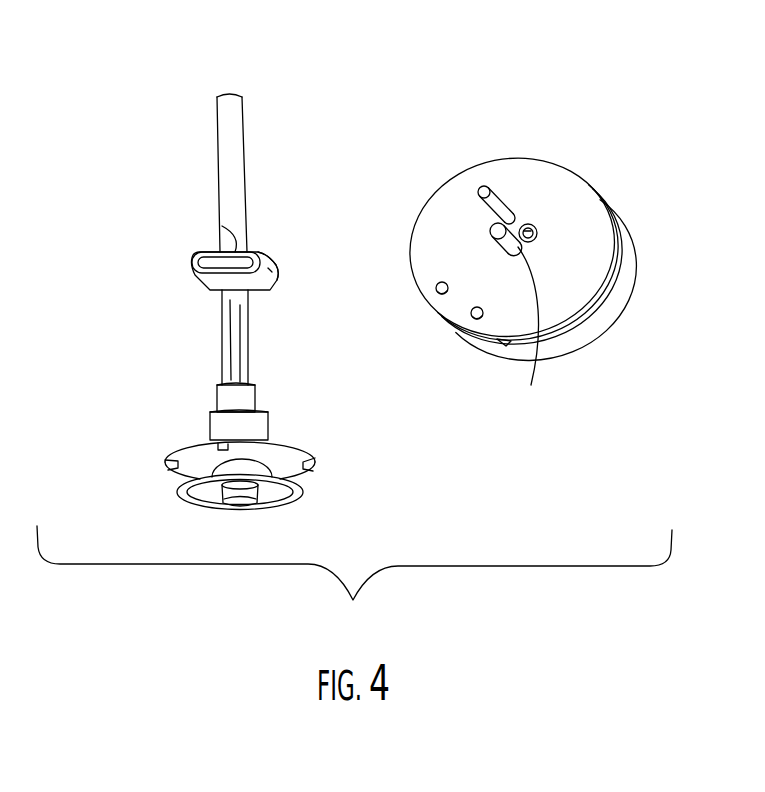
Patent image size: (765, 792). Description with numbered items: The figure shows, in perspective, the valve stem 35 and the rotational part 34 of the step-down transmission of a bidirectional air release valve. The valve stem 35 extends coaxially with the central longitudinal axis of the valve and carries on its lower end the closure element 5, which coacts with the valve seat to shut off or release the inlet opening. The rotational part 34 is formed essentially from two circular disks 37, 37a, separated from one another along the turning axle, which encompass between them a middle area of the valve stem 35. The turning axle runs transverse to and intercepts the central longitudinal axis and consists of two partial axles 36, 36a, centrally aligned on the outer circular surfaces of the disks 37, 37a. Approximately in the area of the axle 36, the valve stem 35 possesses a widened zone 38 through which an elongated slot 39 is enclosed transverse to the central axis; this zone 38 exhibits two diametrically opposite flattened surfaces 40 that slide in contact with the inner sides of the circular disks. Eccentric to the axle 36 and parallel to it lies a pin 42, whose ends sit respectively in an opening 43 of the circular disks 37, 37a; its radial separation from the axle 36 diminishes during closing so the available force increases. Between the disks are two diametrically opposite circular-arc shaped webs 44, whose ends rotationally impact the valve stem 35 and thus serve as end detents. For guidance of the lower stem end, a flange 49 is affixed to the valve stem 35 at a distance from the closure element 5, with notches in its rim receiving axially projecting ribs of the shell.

The closure element 5 is at (286, 491).
The rotational part 34 is at (500, 278).
The valve stem 35 is at (235, 150).
The axle 36 is at (497, 232).
The partial axle 36a is at (531, 385).
The circular disk 37 is at (490, 264).
The circular disk 37a is at (605, 307).
The widened zone 38 is at (210, 283).
The elongated slot 39 is at (215, 261).
The flattened surfaces 40 is at (235, 252).
The pin 42 is at (484, 194).
The opening 43 is at (538, 230).
The circular-arc shaped web 44 is at (504, 346).
The flange 49 is at (308, 456).